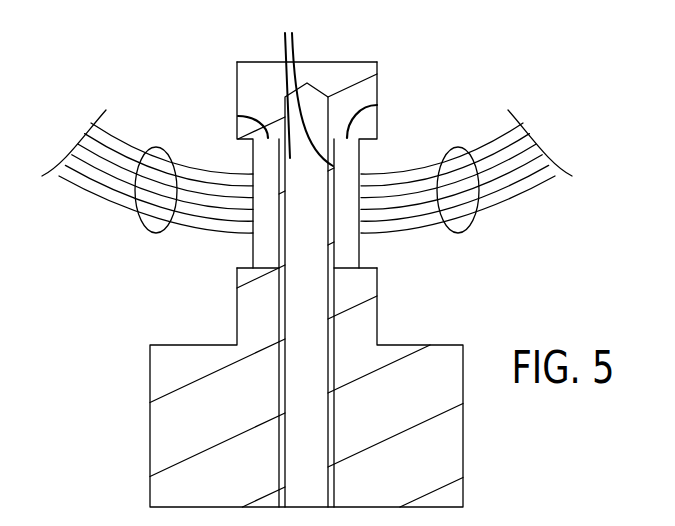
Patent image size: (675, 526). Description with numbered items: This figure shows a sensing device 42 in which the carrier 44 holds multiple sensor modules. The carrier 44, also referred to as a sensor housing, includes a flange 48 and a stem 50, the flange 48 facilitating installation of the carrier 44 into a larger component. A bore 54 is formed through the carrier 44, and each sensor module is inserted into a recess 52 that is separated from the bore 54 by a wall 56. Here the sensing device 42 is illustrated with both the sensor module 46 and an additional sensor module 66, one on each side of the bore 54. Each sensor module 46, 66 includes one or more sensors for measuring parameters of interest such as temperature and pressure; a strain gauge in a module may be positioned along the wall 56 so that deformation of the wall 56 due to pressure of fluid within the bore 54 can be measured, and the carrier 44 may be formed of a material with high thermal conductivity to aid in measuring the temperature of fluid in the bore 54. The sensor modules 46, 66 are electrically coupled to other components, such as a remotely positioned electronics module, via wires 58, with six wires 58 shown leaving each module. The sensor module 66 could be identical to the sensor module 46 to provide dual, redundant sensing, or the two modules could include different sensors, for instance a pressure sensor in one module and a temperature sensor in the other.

The sensing device 42 is at (181, 53).
The carrier 44 is at (316, 55).
The sensor module 46 is at (238, 116).
The flange 48 is at (463, 427).
The stem 50 is at (378, 81).
The recess 52 is at (254, 265).
The bore 54 is at (328, 483).
The wall 56 is at (305, 86).
The wires 58 is at (157, 148).
The additional sensor module 66 is at (377, 105).